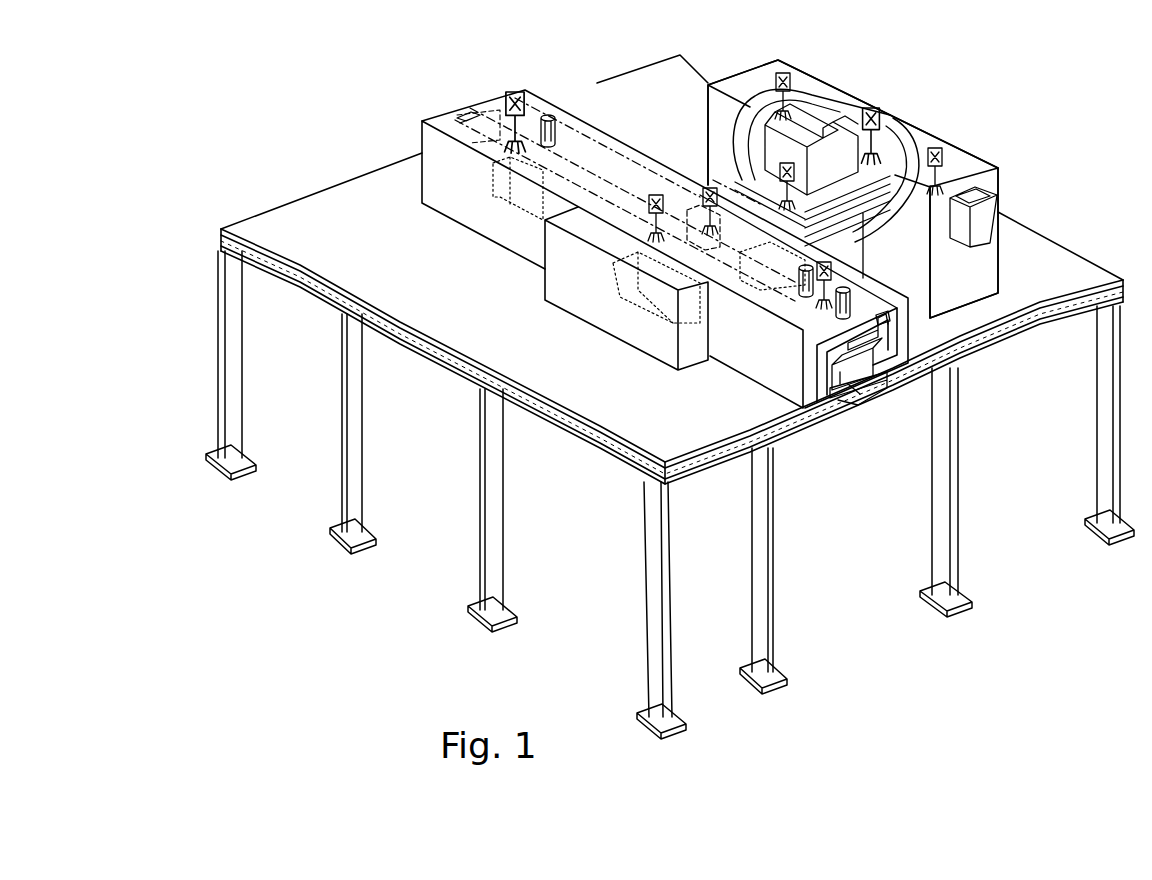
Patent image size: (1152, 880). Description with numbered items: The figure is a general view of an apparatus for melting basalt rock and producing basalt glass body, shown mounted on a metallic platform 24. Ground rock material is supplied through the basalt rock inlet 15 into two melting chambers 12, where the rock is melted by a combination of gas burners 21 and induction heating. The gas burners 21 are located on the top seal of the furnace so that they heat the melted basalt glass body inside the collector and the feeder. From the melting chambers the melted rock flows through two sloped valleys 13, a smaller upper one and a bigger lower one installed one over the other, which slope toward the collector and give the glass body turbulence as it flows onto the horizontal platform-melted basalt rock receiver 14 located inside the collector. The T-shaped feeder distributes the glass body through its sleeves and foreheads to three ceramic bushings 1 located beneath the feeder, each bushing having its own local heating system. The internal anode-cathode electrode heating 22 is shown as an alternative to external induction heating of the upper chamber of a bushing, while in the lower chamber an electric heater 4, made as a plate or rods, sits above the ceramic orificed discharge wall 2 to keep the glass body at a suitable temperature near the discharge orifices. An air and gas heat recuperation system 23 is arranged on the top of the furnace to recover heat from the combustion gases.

The ceramic bushing 1 is at (836, 347).
The ceramic orificed discharge wall 2 is at (837, 393).
The electric heater 4 is at (867, 390).
The melting chamber 12 is at (807, 80).
The sloped valleys 13 is at (767, 148).
The horizontal platform-melted basalt rock receiver 14 is at (857, 198).
The basalt rock inlet 15 is at (980, 203).
The gas burners 21 is at (713, 188).
The internal anode-cathode electrode heating 22 is at (548, 117).
The air and gas heat recuperation system 23 is at (500, 105).
The metallic platform 24 is at (357, 212).